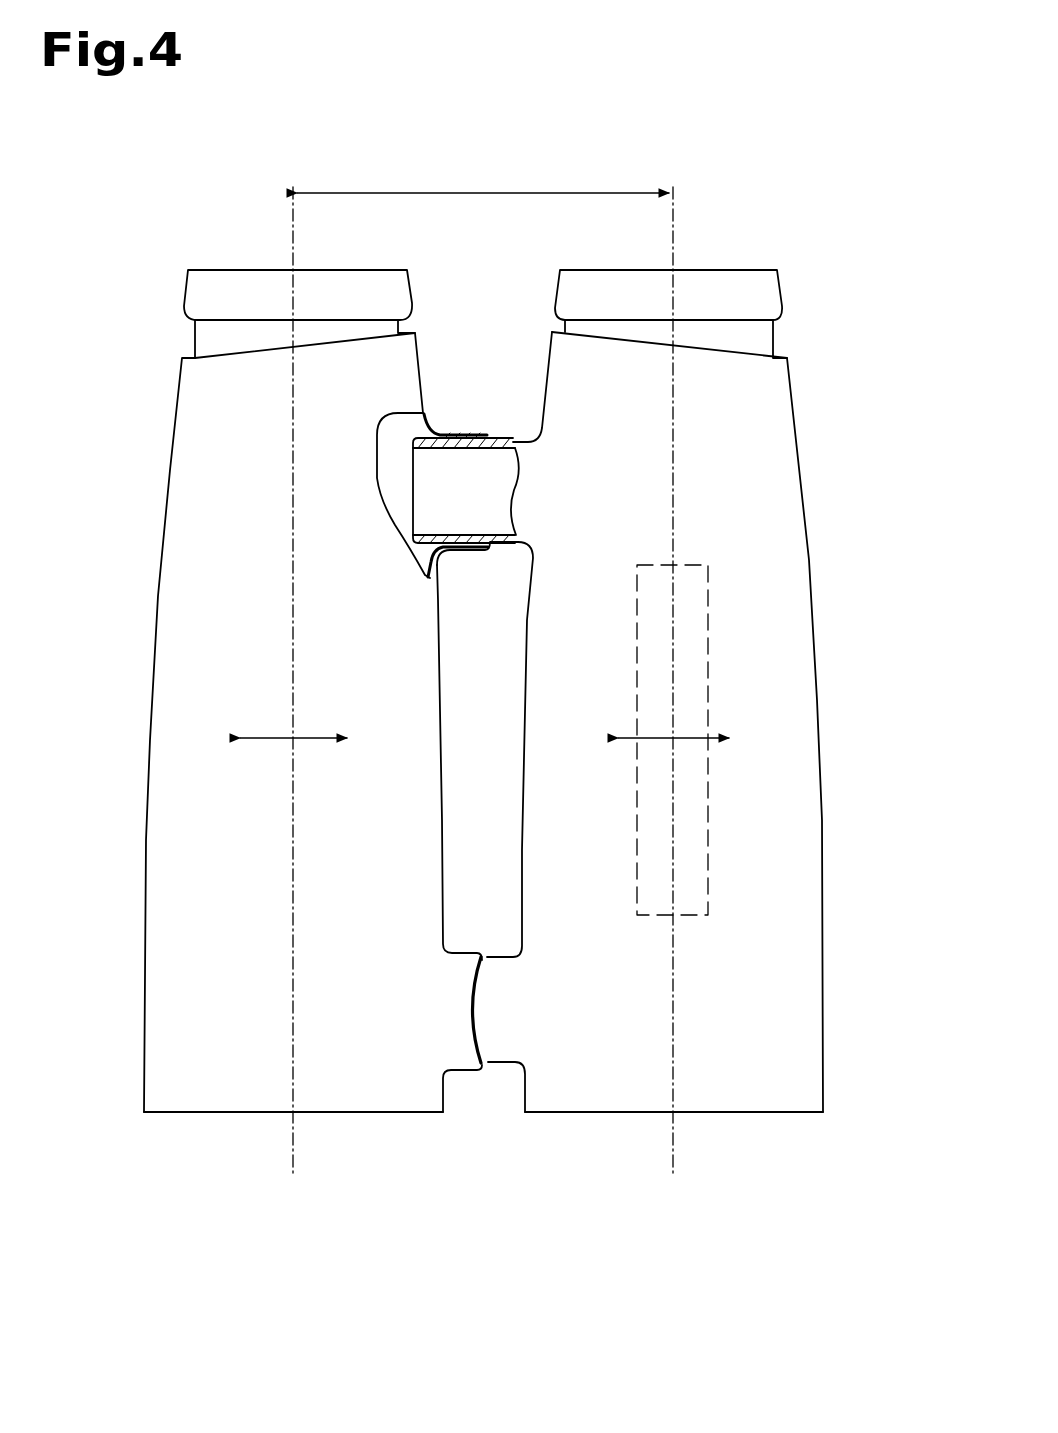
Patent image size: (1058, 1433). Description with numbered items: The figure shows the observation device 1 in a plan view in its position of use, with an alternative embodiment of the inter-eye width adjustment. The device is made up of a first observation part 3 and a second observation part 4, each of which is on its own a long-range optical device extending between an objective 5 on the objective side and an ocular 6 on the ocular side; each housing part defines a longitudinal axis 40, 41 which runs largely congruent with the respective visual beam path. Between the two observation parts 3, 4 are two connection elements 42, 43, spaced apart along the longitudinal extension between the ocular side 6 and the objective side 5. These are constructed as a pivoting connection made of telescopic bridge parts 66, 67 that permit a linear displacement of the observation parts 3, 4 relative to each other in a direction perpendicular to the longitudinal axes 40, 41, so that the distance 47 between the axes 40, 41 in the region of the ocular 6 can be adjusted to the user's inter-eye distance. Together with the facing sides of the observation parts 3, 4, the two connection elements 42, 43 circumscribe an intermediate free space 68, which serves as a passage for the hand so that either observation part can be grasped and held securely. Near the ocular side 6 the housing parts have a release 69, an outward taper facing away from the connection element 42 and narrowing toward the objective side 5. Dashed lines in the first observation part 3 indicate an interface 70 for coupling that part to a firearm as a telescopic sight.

The observation device 1 is at (763, 168).
The first observation part 3 is at (833, 415).
The second observation part 4 is at (147, 281).
The objective 5 is at (777, 1120).
The ocular 6 is at (774, 252).
The longitudinal axis 40 is at (676, 1158).
The longitudinal axis 41 is at (296, 1158).
The connection element 42 is at (438, 408).
The connection element 43 is at (477, 1084).
The distance 47 is at (518, 191).
The telescopic bridge part 66 is at (495, 437).
The telescopic bridge part 67 is at (458, 434).
The free space 68 is at (513, 697).
The release 69 is at (700, 346).
The interface 70 is at (707, 797).